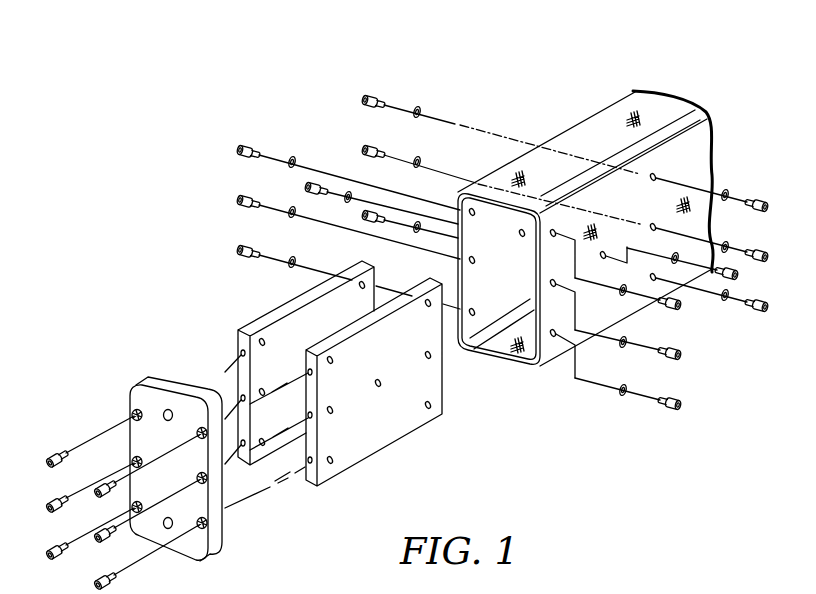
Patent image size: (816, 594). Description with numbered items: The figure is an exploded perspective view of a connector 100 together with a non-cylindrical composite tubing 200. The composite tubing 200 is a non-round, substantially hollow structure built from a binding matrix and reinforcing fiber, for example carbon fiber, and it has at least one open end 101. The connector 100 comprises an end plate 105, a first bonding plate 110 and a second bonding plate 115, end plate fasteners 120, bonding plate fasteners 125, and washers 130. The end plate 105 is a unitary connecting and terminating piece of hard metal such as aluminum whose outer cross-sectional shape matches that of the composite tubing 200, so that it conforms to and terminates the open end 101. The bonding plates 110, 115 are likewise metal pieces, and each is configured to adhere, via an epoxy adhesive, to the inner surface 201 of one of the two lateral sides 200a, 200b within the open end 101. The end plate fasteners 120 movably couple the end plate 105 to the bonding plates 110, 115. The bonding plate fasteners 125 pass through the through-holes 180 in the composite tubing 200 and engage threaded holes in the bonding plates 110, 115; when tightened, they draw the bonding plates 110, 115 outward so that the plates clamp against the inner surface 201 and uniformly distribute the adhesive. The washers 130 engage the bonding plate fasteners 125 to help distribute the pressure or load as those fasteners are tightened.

The connector 100 is at (166, 200).
The open end 101 is at (477, 374).
The end plate 105 is at (163, 372).
The first bonding plate 110 is at (240, 329).
The second bonding plate 115 is at (362, 443).
The end plate fasteners 120 is at (60, 444).
The bonding plate fasteners 125 is at (253, 142).
The washers 130 is at (300, 150).
The through-holes 180 is at (658, 222).
The composite tubing 200 is at (582, 114).
The lateral side 200a is at (453, 269).
The lateral side 200b is at (547, 350).
The inner surface 201 is at (538, 250).